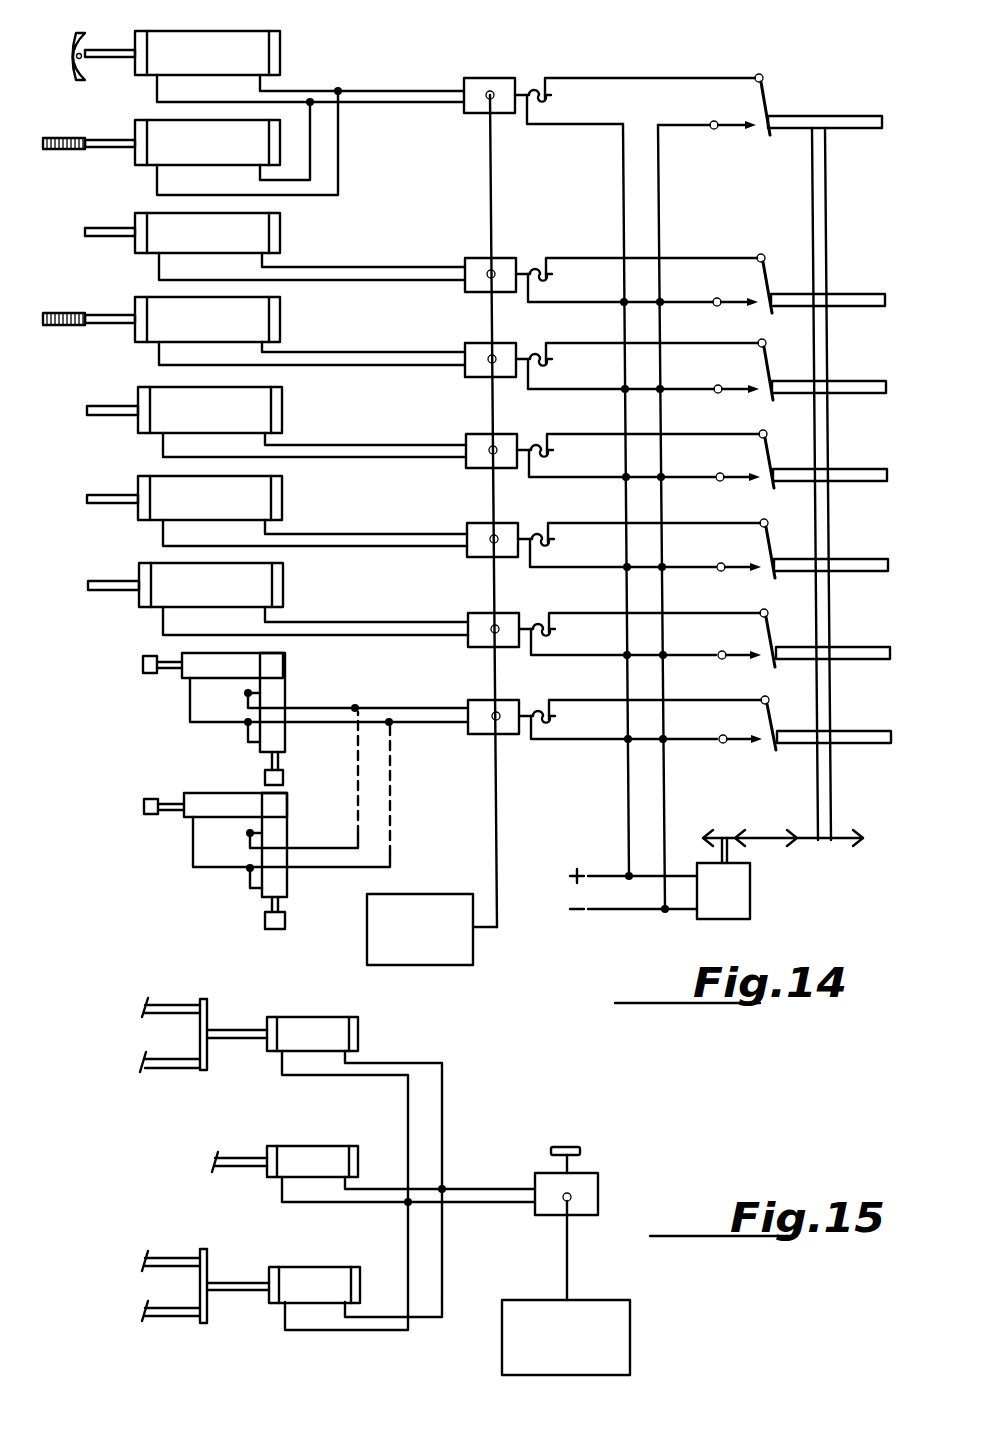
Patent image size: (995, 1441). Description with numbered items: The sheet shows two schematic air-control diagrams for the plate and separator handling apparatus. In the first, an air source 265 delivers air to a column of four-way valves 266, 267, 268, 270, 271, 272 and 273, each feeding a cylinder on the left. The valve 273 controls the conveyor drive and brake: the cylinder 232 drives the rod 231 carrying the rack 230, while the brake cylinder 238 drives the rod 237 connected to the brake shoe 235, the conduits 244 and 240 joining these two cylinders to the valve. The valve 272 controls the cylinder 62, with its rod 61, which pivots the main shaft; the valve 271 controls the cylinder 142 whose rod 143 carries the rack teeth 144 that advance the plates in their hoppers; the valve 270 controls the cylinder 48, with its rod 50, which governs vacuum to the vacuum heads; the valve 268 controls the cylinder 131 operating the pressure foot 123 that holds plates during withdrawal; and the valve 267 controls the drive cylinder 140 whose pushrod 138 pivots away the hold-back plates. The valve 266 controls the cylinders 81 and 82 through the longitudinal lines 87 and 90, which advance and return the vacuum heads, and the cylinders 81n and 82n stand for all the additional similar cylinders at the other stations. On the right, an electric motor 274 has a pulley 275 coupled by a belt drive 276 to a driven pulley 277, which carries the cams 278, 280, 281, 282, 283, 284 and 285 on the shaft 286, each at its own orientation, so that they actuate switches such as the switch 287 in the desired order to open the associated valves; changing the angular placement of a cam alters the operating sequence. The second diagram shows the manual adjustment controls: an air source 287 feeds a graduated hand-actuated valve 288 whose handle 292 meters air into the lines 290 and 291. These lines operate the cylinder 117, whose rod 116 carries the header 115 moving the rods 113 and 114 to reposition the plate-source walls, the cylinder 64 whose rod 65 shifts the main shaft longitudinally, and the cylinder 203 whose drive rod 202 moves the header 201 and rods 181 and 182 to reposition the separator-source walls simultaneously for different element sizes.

In FIG. 14, the brake shoe 235 is at (82, 41).
In FIG. 14, the rod 237 is at (125, 53).
In FIG. 14, the brake cylinder 238 is at (222, 40).
In FIG. 14, the rack 230 is at (53, 140).
In FIG. 14, the rod 231 is at (98, 142).
In FIG. 14, the cylinder 232 is at (158, 153).
In FIG. 14, the air line 244 is at (362, 87).
In FIG. 14, the air line 240 is at (394, 107).
In FIG. 14, the fourway valve 273 is at (473, 85).
In FIG. 14, the fourway valve 272 is at (477, 265).
In FIG. 14, the fourway valve 271 is at (475, 352).
In FIG. 14, the fourway valve 270 is at (477, 441).
In FIG. 14, the fourway valve 268 is at (476, 533).
In FIG. 14, the fourway valve 267 is at (483, 623).
In FIG. 14, the fourway valve 266 is at (483, 702).
In FIG. 14, the switch / air source 287 is at (767, 95).
In FIG. 15, the switch / air source 287 is at (617, 1322).
In FIG. 14, the cam 285 is at (852, 118).
In FIG. 14, the cam 284 is at (845, 295).
In FIG. 14, the cam 283 is at (867, 387).
In FIG. 14, the cam 282 is at (867, 472).
In FIG. 14, the cam 281 is at (868, 562).
In FIG. 14, the cam 280 is at (870, 650).
In FIG. 14, the cam 278 is at (868, 735).
In FIG. 14, the shaft 286 is at (832, 768).
In FIG. 14, the belt drive 276 is at (762, 832).
In FIG. 14, the pulley 275 is at (705, 835).
In FIG. 14, the electric motor 274 is at (743, 902).
In FIG. 14, the driven pulley 277 is at (855, 847).
In FIG. 14, the piston rod 61 is at (92, 228).
In FIG. 14, the cylinder 62 is at (243, 232).
In FIG. 14, the rack teeth 144 is at (55, 314).
In FIG. 14, the rod 143 is at (106, 324).
In FIG. 14, the cylinder 142 is at (245, 316).
In FIG. 14, the cylinder 48 is at (263, 406).
In FIG. 14, the piston rod 50 is at (102, 410).
In FIG. 14, the cylinder 131 is at (252, 500).
In FIG. 14, the pressure foot 123 is at (100, 504).
In FIG. 14, the drive cylinder 140 is at (253, 586).
In FIG. 14, the pushrod 138 is at (110, 592).
In FIG. 14, the cylinder 81 is at (245, 665).
In FIG. 14, the cylinder 82 is at (277, 700).
In FIG. 14, the line 87 is at (398, 703).
In FIG. 14, the line 90 is at (438, 727).
In FIG. 14, the cylinder 81n is at (250, 803).
In FIG. 14, the cylinder 82n is at (277, 833).
In FIG. 14, the air source 265 is at (452, 908).
In FIG. 15, the rod 113 is at (162, 1003).
In FIG. 15, the rod 114 is at (172, 1062).
In FIG. 15, the header 115 is at (207, 1007).
In FIG. 15, the rod 116 is at (245, 1030).
In FIG. 15, the cylinder 117 is at (317, 1028).
In FIG. 15, the cylinder 64 is at (303, 1160).
In FIG. 15, the rod 65 is at (234, 1152).
In FIG. 15, the rod 181 is at (165, 1260).
In FIG. 15, the rod 182 is at (170, 1313).
In FIG. 15, the header 201 is at (208, 1259).
In FIG. 15, the drive rod 202 is at (245, 1288).
In FIG. 15, the cylinder 203 is at (305, 1282).
In FIG. 15, the line 290 is at (473, 1185).
In FIG. 15, the line 291 is at (512, 1207).
In FIG. 15, the valve handle 292 is at (573, 1145).
In FIG. 15, the hand-actuated valve 288 is at (592, 1193).